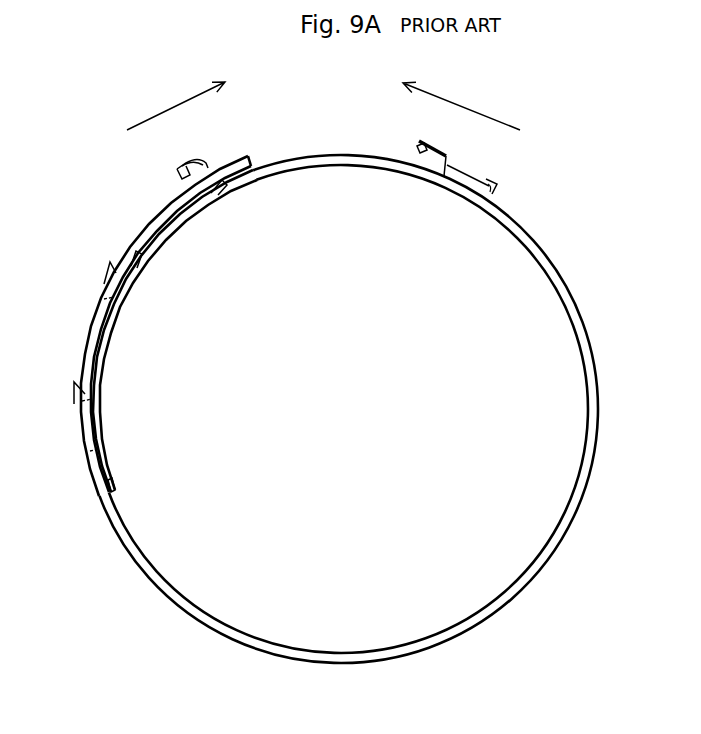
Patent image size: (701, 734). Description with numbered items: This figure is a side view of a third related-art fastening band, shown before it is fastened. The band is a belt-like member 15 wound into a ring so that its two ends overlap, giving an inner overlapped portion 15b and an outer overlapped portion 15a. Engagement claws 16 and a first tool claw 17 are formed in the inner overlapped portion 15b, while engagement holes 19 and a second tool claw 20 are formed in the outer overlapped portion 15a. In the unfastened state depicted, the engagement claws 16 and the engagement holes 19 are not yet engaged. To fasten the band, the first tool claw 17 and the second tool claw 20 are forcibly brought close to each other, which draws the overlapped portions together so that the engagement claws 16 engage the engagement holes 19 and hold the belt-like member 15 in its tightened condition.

The belt-like member 15 is at (598, 254).
The outer overlapped portion 15a is at (245, 152).
The inner overlapped portion 15b is at (178, 229).
The engagement claws 16 is at (223, 195).
The first tool claw 17 is at (473, 172).
The engagement holes 19 is at (103, 328).
The second tool claw 20 is at (198, 162).